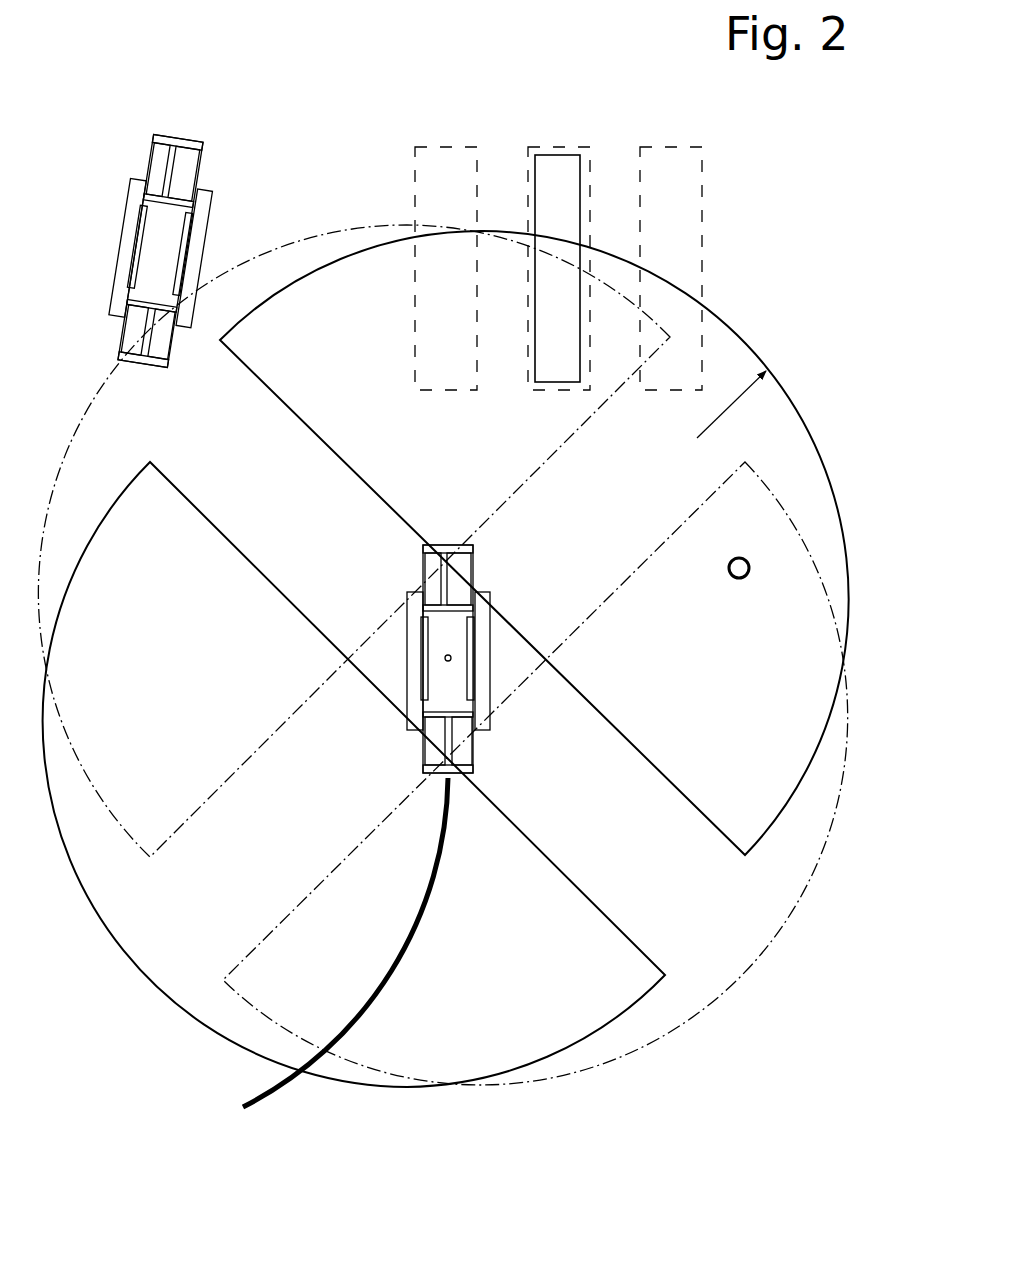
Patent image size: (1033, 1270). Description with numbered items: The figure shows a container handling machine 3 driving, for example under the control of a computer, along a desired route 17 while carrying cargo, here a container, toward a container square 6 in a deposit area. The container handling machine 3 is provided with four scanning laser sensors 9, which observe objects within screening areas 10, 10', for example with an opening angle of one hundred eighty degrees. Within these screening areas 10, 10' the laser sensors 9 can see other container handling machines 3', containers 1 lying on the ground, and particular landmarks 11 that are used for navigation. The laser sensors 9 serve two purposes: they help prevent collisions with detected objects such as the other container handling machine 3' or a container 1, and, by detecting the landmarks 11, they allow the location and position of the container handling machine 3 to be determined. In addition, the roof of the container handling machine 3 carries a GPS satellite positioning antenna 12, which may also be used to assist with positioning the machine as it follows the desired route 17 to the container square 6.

The container 1 is at (557, 268).
The container handling machine 3 is at (393, 659).
The other container handling machine 3' is at (161, 235).
The container square 6 is at (446, 147).
The scanning laser sensor 9 is at (405, 590).
The screening area 10 is at (446, 659).
The screening area 10' is at (442, 655).
The landmark 11 is at (740, 580).
The GPS satellite positioning antenna 12 is at (443, 657).
The desired route 17 is at (423, 905).